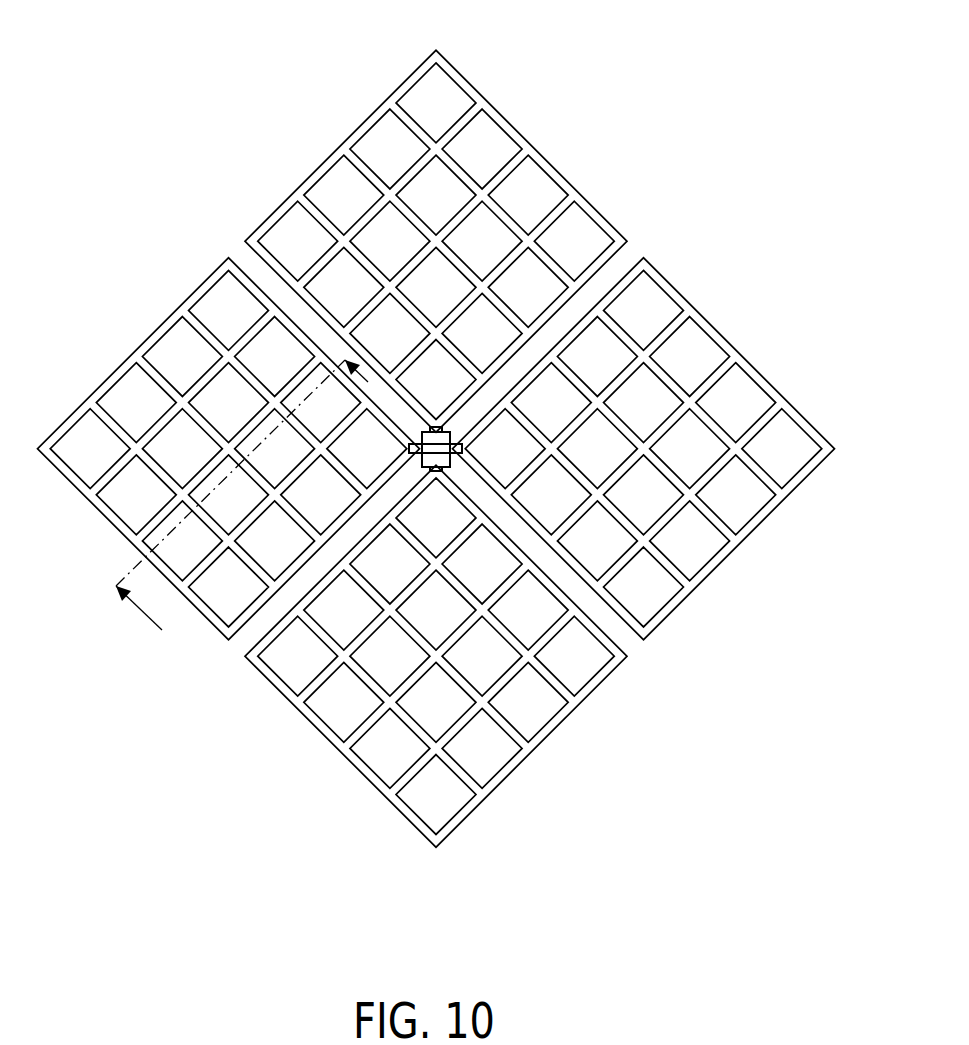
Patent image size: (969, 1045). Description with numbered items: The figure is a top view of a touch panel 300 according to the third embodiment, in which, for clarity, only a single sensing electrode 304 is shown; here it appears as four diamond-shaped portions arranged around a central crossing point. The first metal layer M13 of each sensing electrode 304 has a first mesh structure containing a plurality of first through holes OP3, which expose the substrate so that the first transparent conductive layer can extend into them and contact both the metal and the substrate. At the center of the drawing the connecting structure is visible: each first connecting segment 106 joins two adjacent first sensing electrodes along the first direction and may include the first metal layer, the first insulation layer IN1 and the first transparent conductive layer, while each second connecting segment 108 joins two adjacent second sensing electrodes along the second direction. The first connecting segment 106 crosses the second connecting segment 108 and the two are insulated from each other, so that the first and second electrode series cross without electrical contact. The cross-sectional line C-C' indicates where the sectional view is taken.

The touch panel 300 is at (685, 62).
The sensing electrode 304 is at (495, 72).
The first metal layer M13 is at (140, 340).
The first through hole OP3 is at (231, 291).
The second connecting segment 108 is at (409, 447).
The first insulation layer IN1 is at (447, 460).
The first connecting segment 106 is at (434, 472).